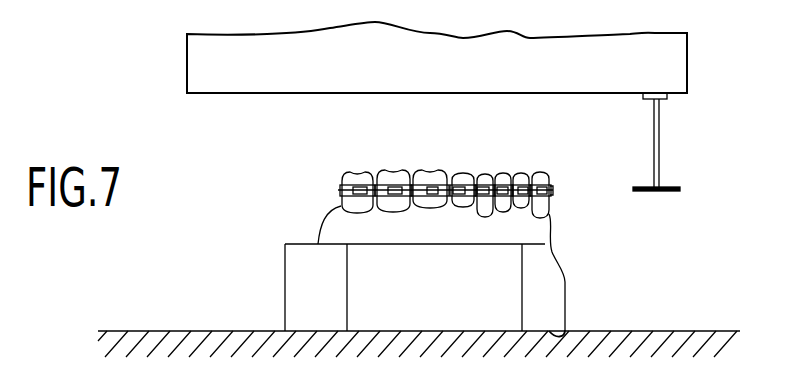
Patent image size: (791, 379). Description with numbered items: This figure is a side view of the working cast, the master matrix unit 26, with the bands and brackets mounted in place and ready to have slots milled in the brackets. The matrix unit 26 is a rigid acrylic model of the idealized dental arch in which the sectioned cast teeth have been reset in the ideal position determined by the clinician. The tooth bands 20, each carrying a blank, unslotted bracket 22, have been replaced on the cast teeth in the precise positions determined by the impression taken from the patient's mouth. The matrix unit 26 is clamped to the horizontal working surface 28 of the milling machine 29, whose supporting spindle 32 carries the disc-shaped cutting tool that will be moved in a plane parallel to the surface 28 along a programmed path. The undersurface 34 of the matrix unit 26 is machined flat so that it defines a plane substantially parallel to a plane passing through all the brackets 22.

The tooth bands 20 is at (343, 186).
The blank brackets 22 is at (361, 187).
The master matrix unit 26 is at (556, 292).
The horizontal working surface 28 is at (704, 330).
The milling machine 29 is at (183, 78).
The supporting spindle 32 is at (660, 149).
The undersurface 34 is at (573, 331).